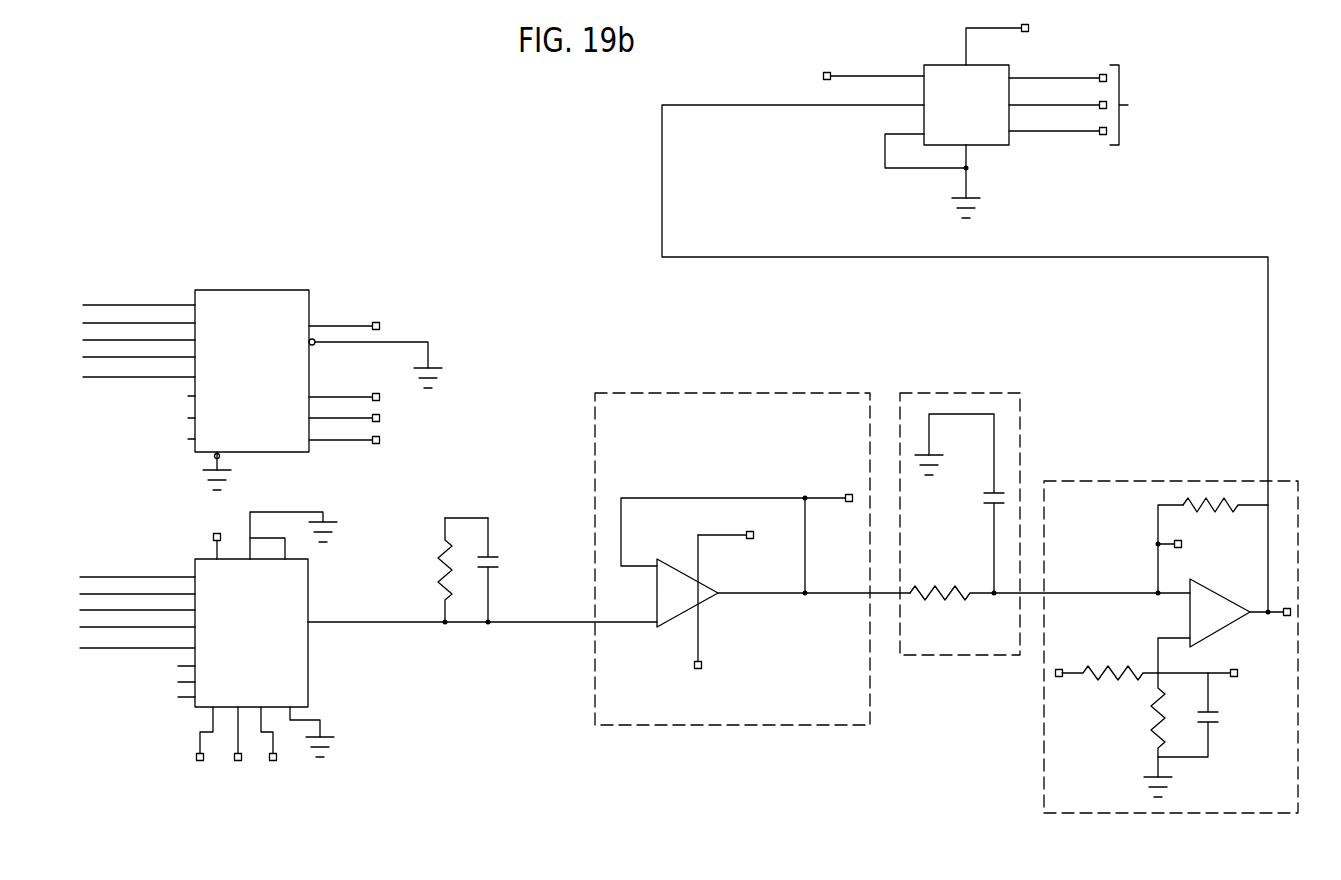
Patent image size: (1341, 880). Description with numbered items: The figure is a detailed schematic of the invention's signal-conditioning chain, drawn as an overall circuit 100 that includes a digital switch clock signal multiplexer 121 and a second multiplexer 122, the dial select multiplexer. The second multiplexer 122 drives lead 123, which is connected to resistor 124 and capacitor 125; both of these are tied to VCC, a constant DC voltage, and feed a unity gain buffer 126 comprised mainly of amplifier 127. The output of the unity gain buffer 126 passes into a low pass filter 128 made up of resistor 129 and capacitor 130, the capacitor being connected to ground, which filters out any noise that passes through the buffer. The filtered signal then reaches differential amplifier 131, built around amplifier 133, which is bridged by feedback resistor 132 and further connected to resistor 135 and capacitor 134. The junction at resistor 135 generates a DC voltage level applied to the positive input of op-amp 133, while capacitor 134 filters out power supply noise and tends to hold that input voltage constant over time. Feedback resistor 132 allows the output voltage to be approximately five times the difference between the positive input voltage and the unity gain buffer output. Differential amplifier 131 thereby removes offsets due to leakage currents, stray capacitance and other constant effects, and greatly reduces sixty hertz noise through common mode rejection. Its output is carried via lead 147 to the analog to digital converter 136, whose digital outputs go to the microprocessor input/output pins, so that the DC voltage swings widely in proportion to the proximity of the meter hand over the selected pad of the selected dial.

The input circuit 100 is at (254, 207).
The digital switch clock signal multiplexer 121 is at (240, 370).
The second multiplexer 122 is at (240, 638).
The lead 123 is at (385, 623).
The resistor 124 is at (437, 564).
The capacitor 125 is at (502, 562).
The unity gain buffer 126 is at (737, 393).
The amplifier 127 is at (665, 610).
The low pass filter 128 is at (952, 393).
The resistor 129 is at (944, 599).
The capacitor 130 is at (983, 499).
The differential amplifier 131 is at (1133, 482).
The feedback resistor 132 is at (1214, 513).
The amplifier 133 is at (1200, 622).
The capacitor 134 is at (1219, 717).
The resistor 135 is at (1150, 722).
The analog to digital converter 136 is at (954, 109).
The lead 147 is at (1268, 307).